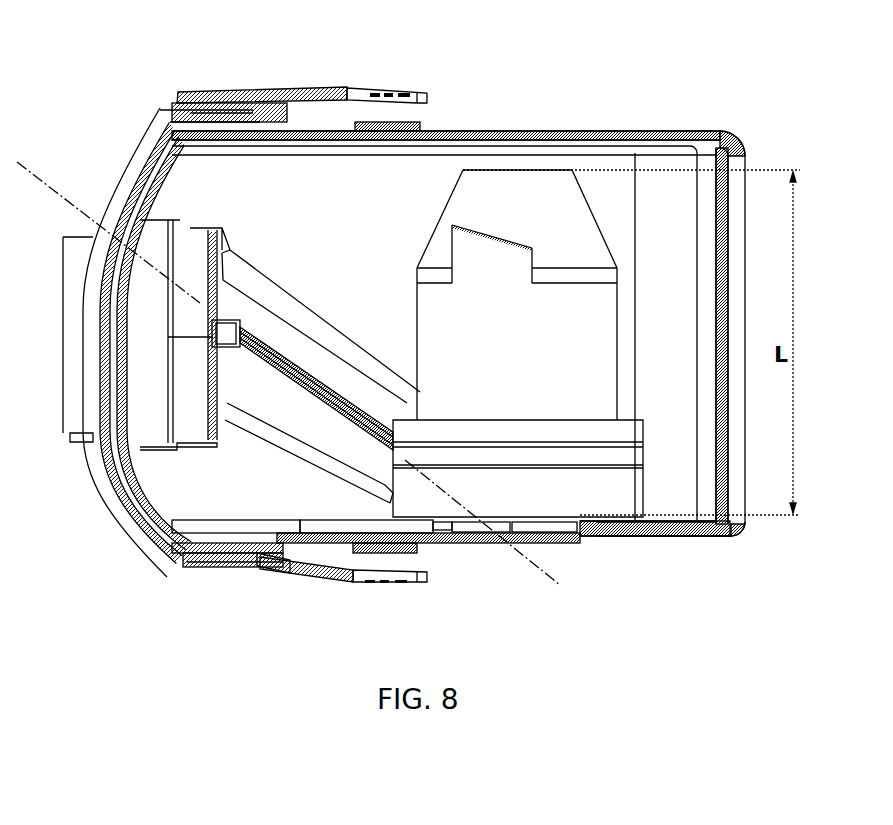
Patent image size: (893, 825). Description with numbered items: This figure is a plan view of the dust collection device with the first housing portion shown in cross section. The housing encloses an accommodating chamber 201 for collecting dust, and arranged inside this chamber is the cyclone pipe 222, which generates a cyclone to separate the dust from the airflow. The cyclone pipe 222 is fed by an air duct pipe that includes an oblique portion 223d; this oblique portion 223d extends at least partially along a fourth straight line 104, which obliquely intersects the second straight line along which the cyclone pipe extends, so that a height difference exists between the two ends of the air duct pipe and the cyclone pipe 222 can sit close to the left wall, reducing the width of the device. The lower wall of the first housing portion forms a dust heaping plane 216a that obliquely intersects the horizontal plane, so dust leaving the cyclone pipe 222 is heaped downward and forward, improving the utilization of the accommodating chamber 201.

The fourth straight line 104 is at (47, 172).
The accommodating chamber 201 is at (646, 147).
The dust heaping plane 216a is at (433, 170).
The cyclone pipe 222 is at (537, 192).
The oblique portion 223d is at (335, 462).